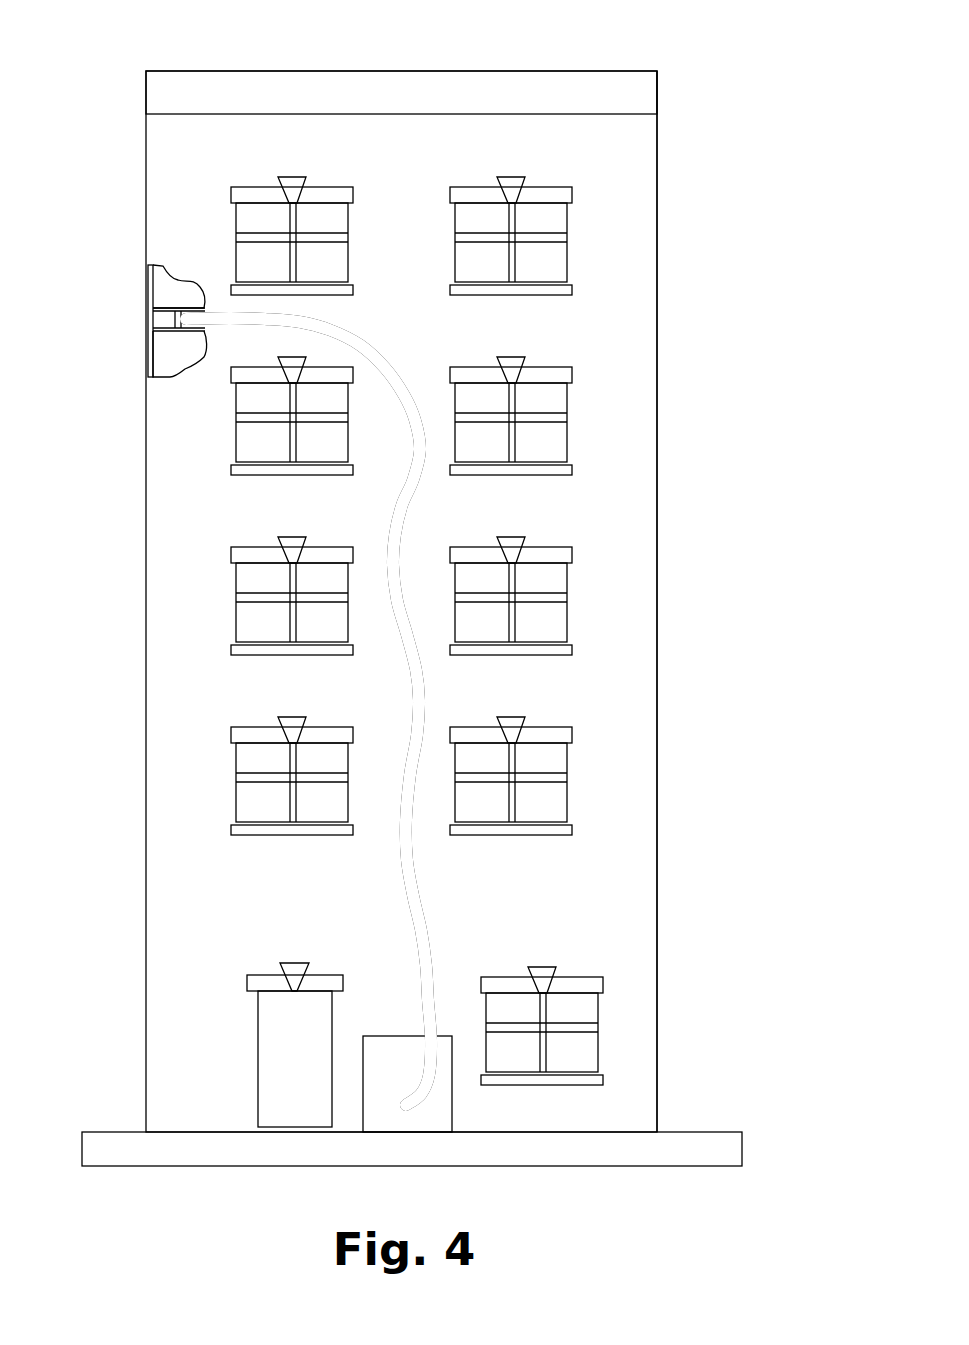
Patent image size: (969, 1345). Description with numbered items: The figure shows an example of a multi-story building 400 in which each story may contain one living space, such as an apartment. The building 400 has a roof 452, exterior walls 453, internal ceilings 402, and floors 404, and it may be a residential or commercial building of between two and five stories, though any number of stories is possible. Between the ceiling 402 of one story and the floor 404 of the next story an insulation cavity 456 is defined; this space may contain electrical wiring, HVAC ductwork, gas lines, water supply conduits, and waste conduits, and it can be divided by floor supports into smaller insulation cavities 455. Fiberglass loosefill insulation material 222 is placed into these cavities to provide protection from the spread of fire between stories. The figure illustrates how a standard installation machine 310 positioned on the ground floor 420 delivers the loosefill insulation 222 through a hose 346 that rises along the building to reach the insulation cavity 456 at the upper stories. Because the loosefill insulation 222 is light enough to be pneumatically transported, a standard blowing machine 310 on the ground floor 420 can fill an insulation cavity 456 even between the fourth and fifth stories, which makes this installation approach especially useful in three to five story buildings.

The multi-story building 400 is at (720, 205).
The roof 452 is at (448, 97).
The exterior walls 453 is at (614, 549).
The fiberglass loosefill insulation material 222 is at (131, 315).
The floor 404 is at (163, 300).
The ceiling 402 is at (152, 352).
The insulation cavities 455 is at (160, 318).
The insulation cavity 456 is at (109, 315).
The hose 346 is at (363, 341).
The ground floor 420 is at (168, 1064).
The installation machine 310 is at (468, 1120).